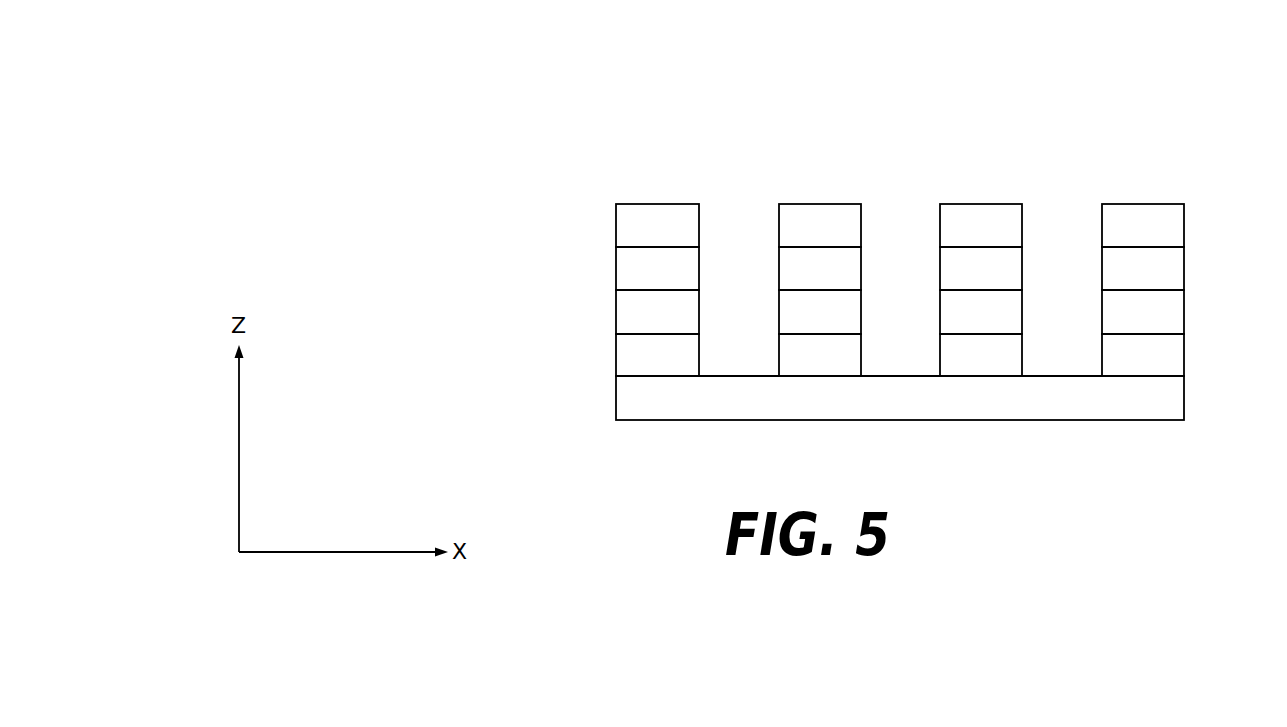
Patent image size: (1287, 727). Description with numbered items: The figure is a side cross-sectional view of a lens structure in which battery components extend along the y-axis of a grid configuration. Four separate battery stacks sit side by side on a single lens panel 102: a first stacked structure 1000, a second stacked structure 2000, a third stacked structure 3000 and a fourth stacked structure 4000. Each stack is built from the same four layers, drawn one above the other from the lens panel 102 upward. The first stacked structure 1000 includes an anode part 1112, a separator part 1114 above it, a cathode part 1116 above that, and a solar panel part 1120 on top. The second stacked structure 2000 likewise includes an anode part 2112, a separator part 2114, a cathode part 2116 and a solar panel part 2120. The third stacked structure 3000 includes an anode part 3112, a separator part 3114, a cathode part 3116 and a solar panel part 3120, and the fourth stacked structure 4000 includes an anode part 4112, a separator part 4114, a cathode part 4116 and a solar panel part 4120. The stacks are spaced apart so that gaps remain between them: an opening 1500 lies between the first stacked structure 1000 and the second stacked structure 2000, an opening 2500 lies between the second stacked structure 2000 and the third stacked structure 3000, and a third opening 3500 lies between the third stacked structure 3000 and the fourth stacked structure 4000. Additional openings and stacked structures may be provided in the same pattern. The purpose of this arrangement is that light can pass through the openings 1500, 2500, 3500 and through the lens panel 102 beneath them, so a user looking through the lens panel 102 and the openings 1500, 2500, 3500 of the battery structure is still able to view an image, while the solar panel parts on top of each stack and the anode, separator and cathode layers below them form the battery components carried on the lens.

The lens panel 102 is at (1184, 398).
The first stacked structure 1000 is at (602, 208).
The opening 1500 is at (732, 177).
The second stacked structure 2000 is at (793, 194).
The opening 2500 is at (900, 177).
The third stacked structure 3000 is at (954, 194).
The third opening 3500 is at (1068, 177).
The fourth stacked structure 4000 is at (1116, 194).
The anode part 1112 is at (616, 357).
The separator part 1114 is at (616, 313).
The cathode part 1116 is at (616, 273).
The solar panel part 1120 is at (616, 231).
The anode part 2112 is at (779, 361).
The separator part 2114 is at (779, 316).
The cathode part 2116 is at (779, 273).
The solar panel part 2120 is at (779, 230).
The anode part 3112 is at (940, 361).
The separator part 3114 is at (940, 316).
The cathode part 3116 is at (940, 273).
The solar panel part 3120 is at (940, 230).
The anode part 4112 is at (1102, 361).
The separator part 4114 is at (1102, 316).
The cathode part 4116 is at (1102, 273).
The solar panel part 4120 is at (1102, 230).